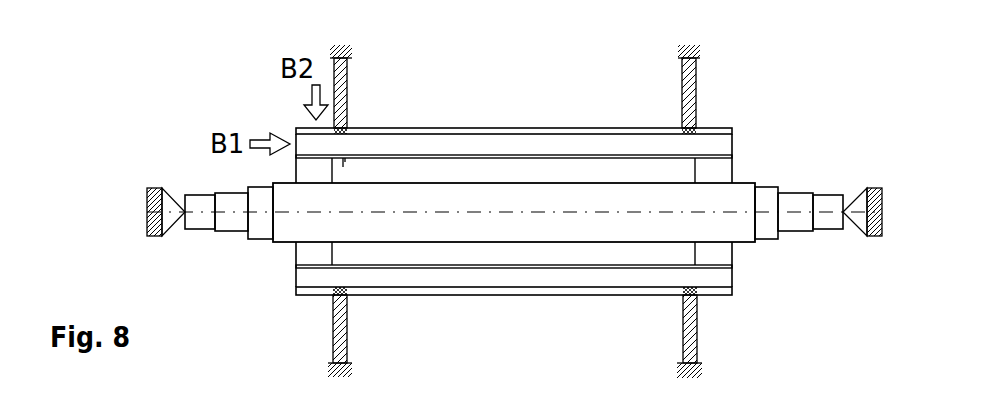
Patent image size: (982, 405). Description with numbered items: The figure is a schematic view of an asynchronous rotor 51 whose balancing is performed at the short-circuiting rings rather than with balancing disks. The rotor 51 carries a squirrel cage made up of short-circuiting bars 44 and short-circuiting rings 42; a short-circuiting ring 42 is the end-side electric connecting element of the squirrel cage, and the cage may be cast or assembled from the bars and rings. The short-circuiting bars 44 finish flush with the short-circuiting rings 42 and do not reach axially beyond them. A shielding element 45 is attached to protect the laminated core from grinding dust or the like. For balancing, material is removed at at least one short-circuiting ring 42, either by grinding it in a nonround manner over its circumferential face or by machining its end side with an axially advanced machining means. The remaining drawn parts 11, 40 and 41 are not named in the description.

The rotor 51 is at (207, 93).
The roller axis 11 is at (610, 210).
The roller 40 is at (533, 230).
The lower frame member 41 is at (433, 268).
The short-circuiting ring 42 is at (734, 166).
The short-circuiting bars 44 is at (734, 142).
The shielding element 45 is at (347, 83).